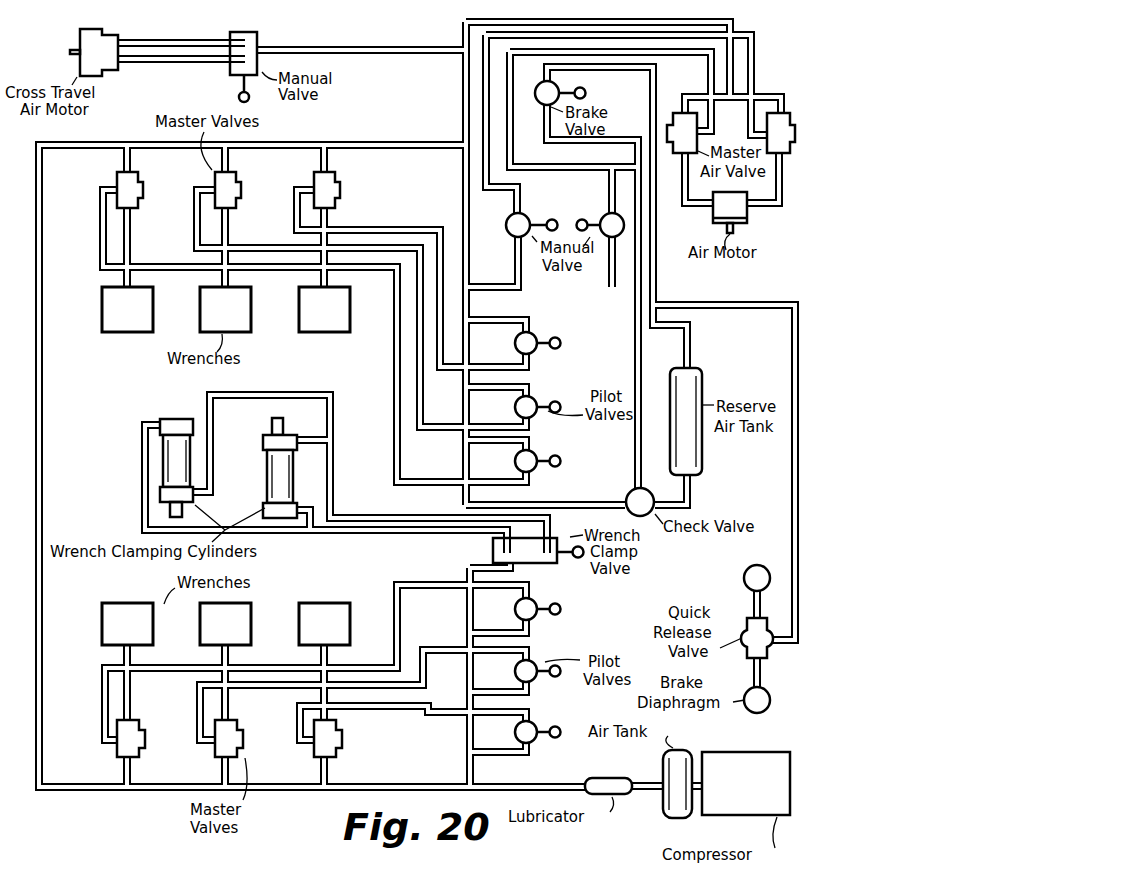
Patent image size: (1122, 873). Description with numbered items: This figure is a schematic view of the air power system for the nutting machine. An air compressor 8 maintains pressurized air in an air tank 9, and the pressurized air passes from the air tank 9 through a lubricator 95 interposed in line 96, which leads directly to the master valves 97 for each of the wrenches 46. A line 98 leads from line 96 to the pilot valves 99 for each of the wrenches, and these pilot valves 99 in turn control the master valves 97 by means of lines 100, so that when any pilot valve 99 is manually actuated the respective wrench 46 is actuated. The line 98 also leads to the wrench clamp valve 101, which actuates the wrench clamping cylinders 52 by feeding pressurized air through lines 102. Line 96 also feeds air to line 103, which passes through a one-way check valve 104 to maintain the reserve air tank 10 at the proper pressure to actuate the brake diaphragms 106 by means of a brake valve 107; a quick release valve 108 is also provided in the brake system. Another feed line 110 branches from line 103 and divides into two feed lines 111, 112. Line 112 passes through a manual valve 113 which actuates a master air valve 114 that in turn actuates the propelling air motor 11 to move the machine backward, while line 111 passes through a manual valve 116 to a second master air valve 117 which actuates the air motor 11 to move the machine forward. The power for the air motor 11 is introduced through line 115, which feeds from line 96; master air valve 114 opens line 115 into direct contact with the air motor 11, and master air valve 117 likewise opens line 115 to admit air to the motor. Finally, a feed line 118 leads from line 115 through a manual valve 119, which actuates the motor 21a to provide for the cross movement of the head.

The motor 21a is at (75, 38).
The manual valve 119 is at (262, 42).
The feed line 118 is at (420, 57).
The line 115 is at (463, 92).
The line 96 is at (392, 138).
The master valve 97 is at (143, 188).
The wrench 46 is at (102, 310).
The line 103 is at (463, 166).
The line 100 is at (449, 725).
The brake valve 107 is at (537, 87).
The feed line 112 is at (514, 136).
The feed line 111 is at (502, 190).
The manual valve 116 is at (527, 216).
The manual valve 113 is at (605, 216).
The feed line 110 is at (503, 286).
The master air valve 114 is at (675, 110).
The master air valve 117 is at (785, 110).
The air motor 11 is at (749, 215).
The pilot valve 99 is at (536, 334).
The wrench clamping cylinder 52 is at (170, 420).
The reserve air tank 10 is at (706, 379).
The one-way check valve 104 is at (651, 475).
The line 102 is at (385, 514).
The wrench clamp valve 101 is at (493, 551).
The brake diaphragm 106 is at (762, 564).
The quick release valve 108 is at (767, 656).
The line 98 is at (466, 770).
The lubricator 95 is at (618, 777).
The air tank 9 is at (662, 813).
The air compressor 8 is at (722, 818).